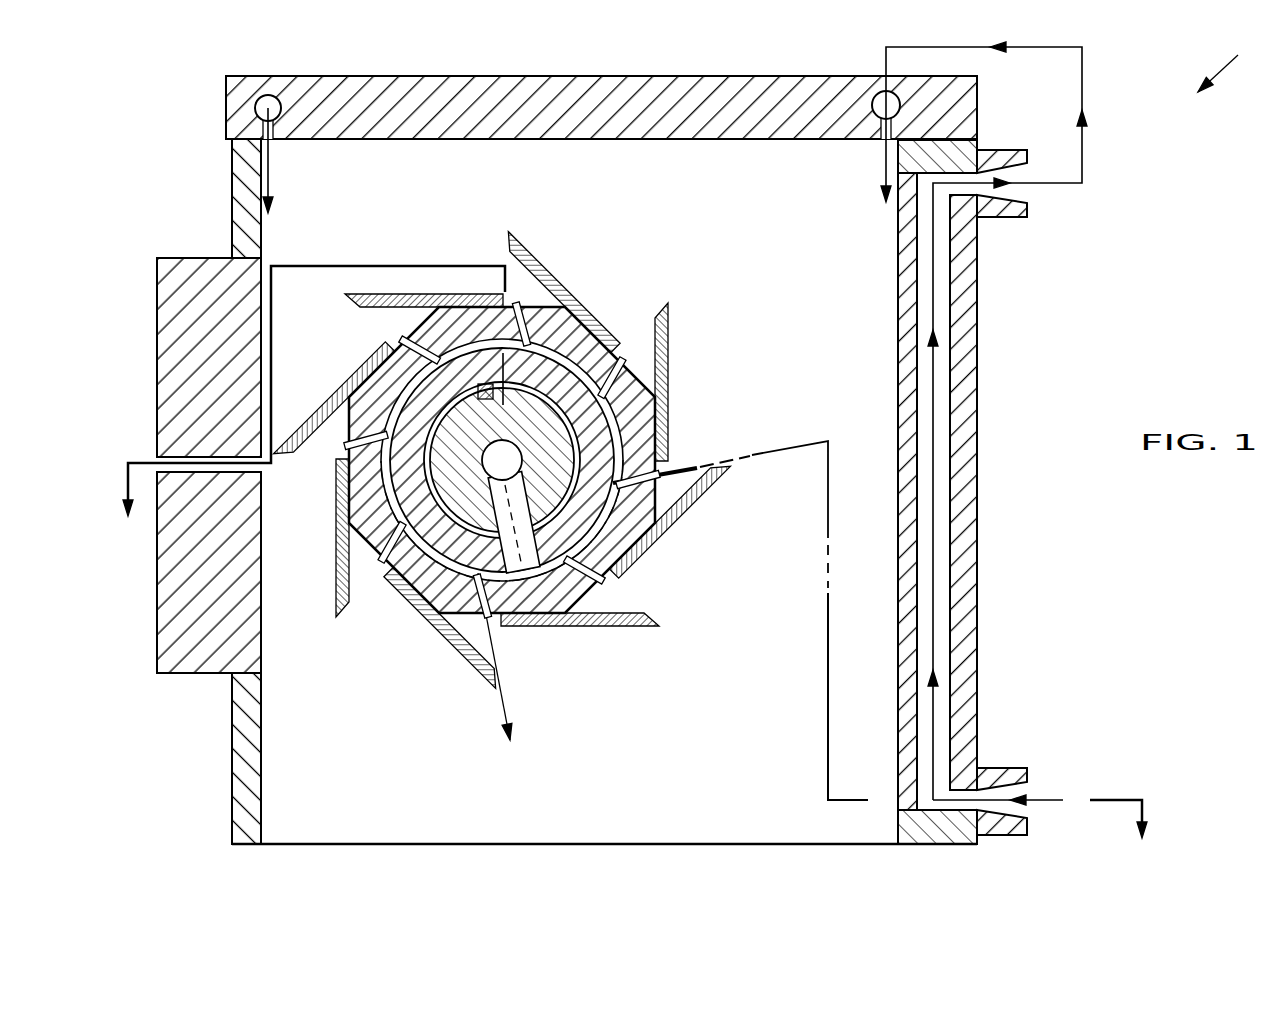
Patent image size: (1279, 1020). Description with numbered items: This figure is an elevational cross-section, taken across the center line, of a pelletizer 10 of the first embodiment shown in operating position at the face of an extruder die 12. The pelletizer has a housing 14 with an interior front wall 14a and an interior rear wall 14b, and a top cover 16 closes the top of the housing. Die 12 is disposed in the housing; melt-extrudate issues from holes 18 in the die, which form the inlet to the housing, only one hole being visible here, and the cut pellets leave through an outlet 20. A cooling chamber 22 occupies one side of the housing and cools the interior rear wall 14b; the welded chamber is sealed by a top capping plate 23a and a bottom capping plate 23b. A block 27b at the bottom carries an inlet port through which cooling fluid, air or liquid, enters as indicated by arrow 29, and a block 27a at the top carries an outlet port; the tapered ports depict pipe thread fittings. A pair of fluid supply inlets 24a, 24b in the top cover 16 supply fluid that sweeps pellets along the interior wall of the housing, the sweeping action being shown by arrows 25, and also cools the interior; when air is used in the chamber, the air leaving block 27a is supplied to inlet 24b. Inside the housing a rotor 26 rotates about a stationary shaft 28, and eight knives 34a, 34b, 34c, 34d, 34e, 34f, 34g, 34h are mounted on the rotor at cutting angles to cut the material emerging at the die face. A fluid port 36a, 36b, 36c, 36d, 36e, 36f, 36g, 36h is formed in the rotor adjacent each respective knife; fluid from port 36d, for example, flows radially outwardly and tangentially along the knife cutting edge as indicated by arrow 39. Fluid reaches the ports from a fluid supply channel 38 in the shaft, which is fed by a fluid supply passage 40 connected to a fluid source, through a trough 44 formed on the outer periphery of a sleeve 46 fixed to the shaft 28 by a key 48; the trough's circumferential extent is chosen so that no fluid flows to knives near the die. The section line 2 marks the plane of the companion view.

The pelletizer 10 is at (1232, 63).
The die 12 is at (175, 673).
The housing 14 is at (245, 183).
The interior front wall 14a is at (262, 780).
The interior rear wall 14b is at (893, 720).
The top cover 16 is at (470, 76).
The holes 18 is at (165, 463).
The outlet 20 is at (480, 845).
The cooling chamber 22 is at (940, 430).
The top capping plate 23a is at (985, 150).
The bottom capping plate 23b is at (937, 844).
The fluid supply inlet 24a is at (268, 95).
The fluid supply inlet 24b is at (884, 100).
The arrows 25 is at (275, 160).
The rotor 26 is at (580, 600).
The block 27a is at (1000, 217).
The block 27b is at (995, 768).
The shaft 28 is at (395, 497).
The arrow 29 is at (1053, 800).
The section line 2 is at (635, 570).
The knife 34a is at (410, 296).
The knife 34b is at (360, 378).
The knife 34c is at (338, 600).
The knife 34d is at (480, 670).
The knife 34e is at (585, 625).
The knife 34f is at (660, 525).
The knife 34g is at (665, 320).
The knife 34h is at (525, 245).
The fluid port 36a is at (430, 365).
The fluid port 36b is at (349, 445).
The fluid port 36c is at (383, 558).
The fluid port 36d is at (492, 615).
The fluid port 36e is at (600, 578).
The fluid port 36f is at (655, 478).
The fluid port 36g is at (625, 365).
The fluid port 36h is at (520, 310).
The fluid supply channel 38 is at (535, 600).
The arrow 39 is at (500, 725).
The fluid supply passage 40 is at (615, 428).
The trough 44 is at (440, 607).
The sleeve 46 is at (575, 325).
The key 48 is at (485, 383).